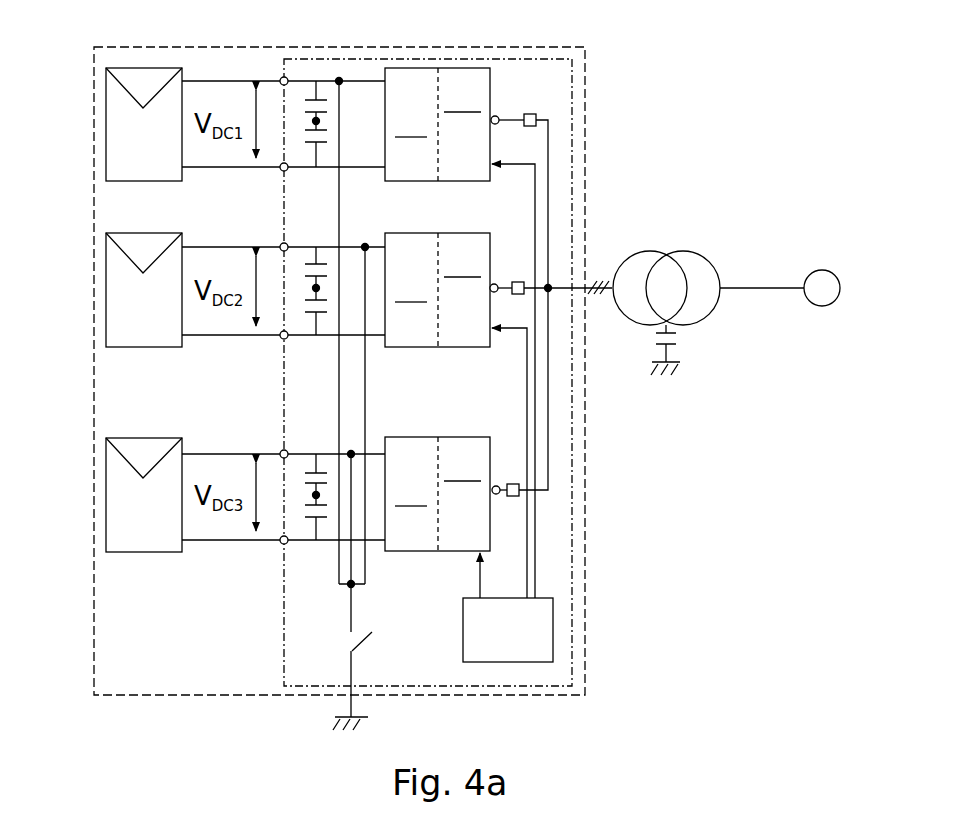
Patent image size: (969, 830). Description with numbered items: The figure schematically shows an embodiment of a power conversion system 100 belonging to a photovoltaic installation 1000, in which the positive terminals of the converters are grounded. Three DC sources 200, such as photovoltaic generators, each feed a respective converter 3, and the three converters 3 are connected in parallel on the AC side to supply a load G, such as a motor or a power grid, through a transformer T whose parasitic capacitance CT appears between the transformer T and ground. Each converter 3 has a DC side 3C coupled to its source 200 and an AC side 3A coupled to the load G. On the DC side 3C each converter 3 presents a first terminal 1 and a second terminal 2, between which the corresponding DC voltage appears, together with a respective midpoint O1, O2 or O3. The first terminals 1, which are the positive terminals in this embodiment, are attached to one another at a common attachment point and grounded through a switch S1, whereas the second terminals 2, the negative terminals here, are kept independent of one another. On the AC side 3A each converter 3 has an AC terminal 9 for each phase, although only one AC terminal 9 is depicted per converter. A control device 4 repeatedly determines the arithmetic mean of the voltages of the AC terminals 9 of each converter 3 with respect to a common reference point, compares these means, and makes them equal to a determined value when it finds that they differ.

The photovoltaic installation 1000 is at (585, 679).
The power conversion system 100 is at (572, 634).
The DC source 200 is at (126, 118).
The first terminal 1 is at (280, 246).
The second terminal 2 is at (281, 336).
The midpoint O1 is at (314, 125).
The midpoint O2 is at (314, 292).
The midpoint O3 is at (314, 499).
The potential unit / common bus PU is at (349, 588).
The switch S1 is at (368, 651).
The converter 3 is at (412, 68).
The DC side 3C is at (411, 309).
The AC side 3A is at (462, 284).
The AC terminal 9 is at (500, 116).
The control device 4 is at (470, 626).
The transformer T is at (708, 288).
The parasitic capacitance CT is at (684, 338).
The load G is at (832, 276).